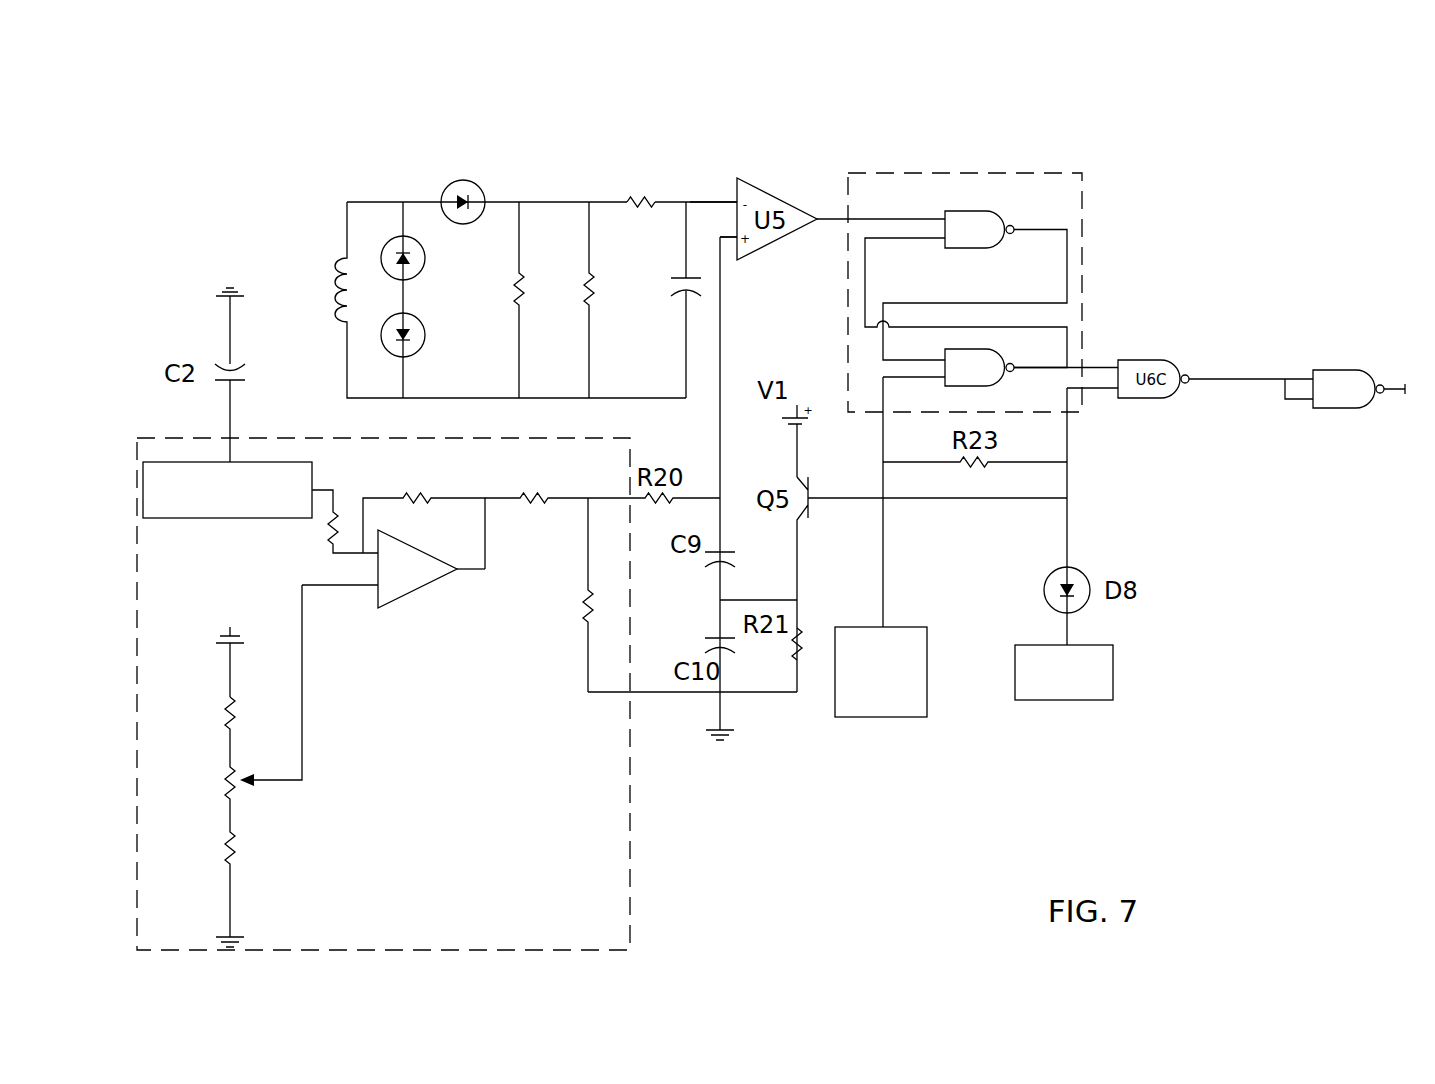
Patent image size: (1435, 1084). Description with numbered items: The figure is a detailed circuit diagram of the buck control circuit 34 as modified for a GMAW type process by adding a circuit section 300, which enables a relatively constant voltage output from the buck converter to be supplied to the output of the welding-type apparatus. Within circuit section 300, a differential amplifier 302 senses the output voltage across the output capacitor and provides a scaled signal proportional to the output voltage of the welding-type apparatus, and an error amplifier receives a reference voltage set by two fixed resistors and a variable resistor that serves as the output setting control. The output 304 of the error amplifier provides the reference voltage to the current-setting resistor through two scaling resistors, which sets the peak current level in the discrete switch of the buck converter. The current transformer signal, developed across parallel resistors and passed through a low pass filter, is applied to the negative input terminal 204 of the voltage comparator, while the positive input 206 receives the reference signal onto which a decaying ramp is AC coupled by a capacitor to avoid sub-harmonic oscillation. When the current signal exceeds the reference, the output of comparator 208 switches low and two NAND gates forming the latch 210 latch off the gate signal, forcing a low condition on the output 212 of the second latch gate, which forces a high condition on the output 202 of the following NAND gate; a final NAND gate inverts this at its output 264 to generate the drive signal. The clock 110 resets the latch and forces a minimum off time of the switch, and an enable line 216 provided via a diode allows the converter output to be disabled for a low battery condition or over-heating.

The buck control circuit 34 is at (496, 143).
The negative input terminal 204 is at (735, 201).
The positive input 206 is at (737, 239).
The output of comparator 208 is at (828, 215).
The latch circuit 210 is at (967, 172).
The output of U6B 212 is at (1037, 366).
The output of NAND gate U6C 202 is at (1219, 377).
The output of inverter U6D 264 is at (1402, 387).
The differential amplifier 302 is at (225, 520).
The output of error amplifier 304 is at (467, 572).
The circuit section 300 is at (630, 868).
The clock 110 is at (880, 717).
The enable line 216 is at (1063, 700).